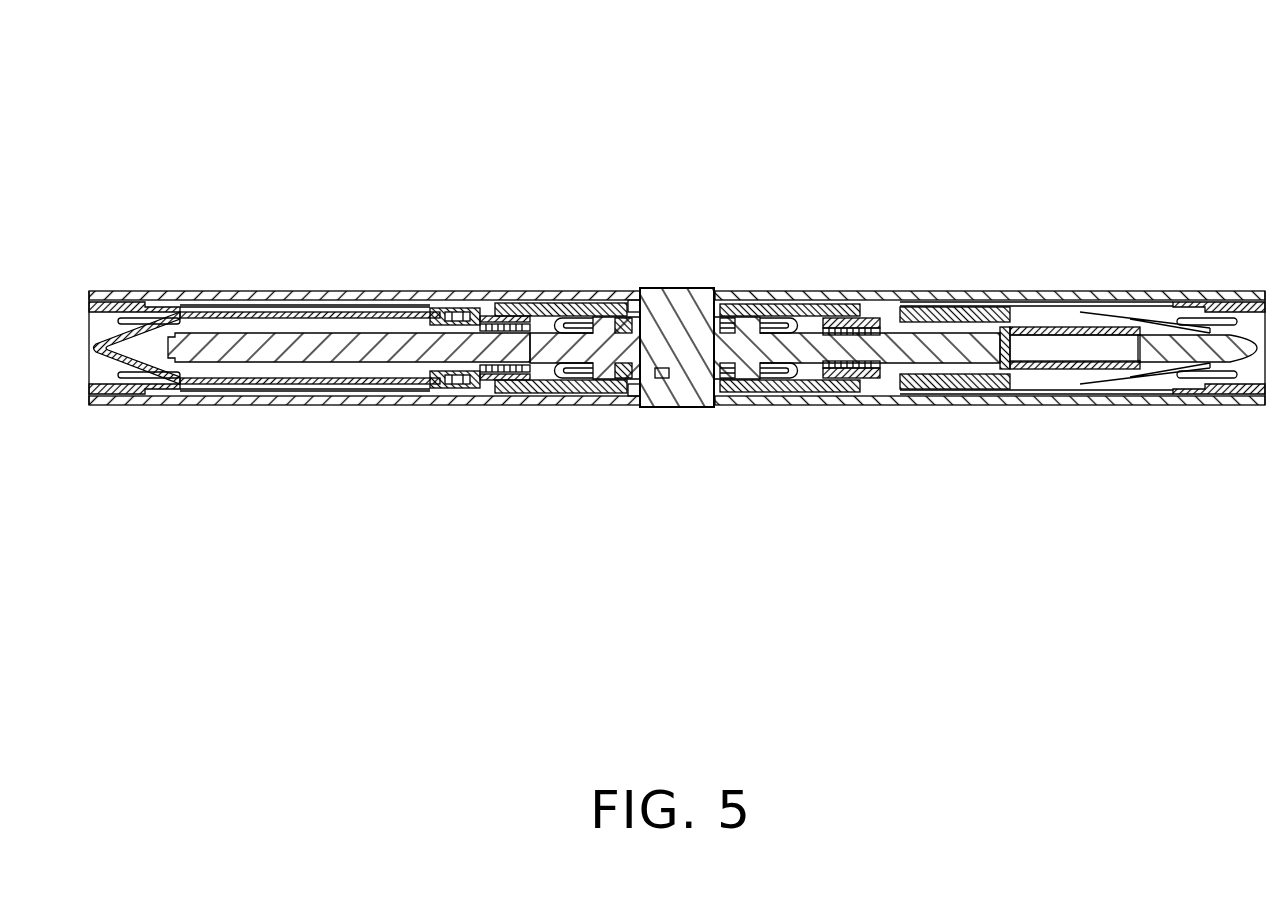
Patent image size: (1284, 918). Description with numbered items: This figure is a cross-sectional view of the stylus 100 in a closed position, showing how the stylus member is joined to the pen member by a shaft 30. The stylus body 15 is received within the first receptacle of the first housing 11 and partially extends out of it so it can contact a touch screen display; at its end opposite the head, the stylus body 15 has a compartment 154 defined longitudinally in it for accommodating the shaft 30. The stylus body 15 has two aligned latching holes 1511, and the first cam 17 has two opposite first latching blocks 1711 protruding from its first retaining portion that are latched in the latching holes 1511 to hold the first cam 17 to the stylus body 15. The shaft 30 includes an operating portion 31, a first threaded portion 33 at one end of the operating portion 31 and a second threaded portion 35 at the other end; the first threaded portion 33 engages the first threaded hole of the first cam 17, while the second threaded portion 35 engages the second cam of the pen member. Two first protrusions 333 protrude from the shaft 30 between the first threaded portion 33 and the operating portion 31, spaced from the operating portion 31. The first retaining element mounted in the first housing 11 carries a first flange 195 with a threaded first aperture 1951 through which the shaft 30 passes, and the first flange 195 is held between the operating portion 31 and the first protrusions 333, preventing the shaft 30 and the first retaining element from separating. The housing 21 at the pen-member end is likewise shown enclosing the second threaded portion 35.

The stylus 100 is at (775, 88).
The first housing 11 is at (258, 296).
The stylus body 15 is at (246, 386).
The compartment 154 is at (335, 368).
The first cam 17 is at (477, 302).
The first latching blocks 1711 is at (438, 392).
The latching holes 1511 is at (465, 388).
The shaft 30 is at (805, 226).
The first threaded portion 33 is at (528, 345).
The first protrusions 333 is at (603, 370).
The first flange 195 is at (623, 380).
The first aperture 1951 is at (664, 378).
The operating portion 31 is at (672, 320).
The second threaded portion 35 is at (808, 347).
The second housing 21 is at (972, 296).